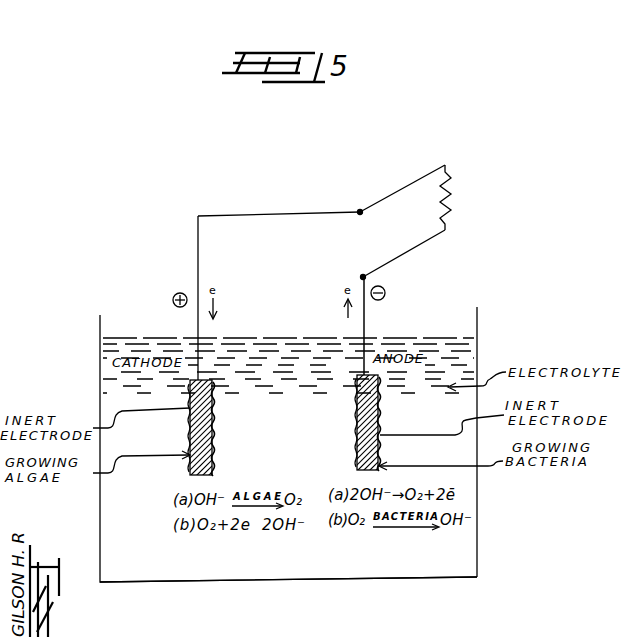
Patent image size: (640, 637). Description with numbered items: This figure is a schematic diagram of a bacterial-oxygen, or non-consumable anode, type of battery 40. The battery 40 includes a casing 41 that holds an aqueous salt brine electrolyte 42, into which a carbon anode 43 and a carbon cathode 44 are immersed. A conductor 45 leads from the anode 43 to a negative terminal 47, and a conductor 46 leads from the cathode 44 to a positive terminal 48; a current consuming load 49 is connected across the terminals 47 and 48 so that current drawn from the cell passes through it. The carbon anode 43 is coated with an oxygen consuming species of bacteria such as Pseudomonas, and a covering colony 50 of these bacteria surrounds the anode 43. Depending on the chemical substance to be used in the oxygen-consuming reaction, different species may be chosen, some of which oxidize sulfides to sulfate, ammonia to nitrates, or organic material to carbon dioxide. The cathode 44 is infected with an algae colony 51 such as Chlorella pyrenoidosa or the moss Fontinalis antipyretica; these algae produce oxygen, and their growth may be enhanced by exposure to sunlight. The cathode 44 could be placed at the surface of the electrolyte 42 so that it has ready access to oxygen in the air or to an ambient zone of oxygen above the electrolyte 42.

The battery 40 is at (479, 326).
The casing 41 is at (478, 494).
The aqueous salt brine electrolyte 42 is at (460, 548).
The carbon anode 43 is at (357, 412).
The carbon cathode 44 is at (213, 440).
The conductor 45 is at (364, 318).
The conductor 46 is at (200, 327).
The negative terminal 47 is at (364, 276).
The positive terminal 48 is at (360, 210).
The current consuming load 49 is at (450, 186).
The covering colony 50 is at (368, 437).
The algae colony 51 is at (213, 451).